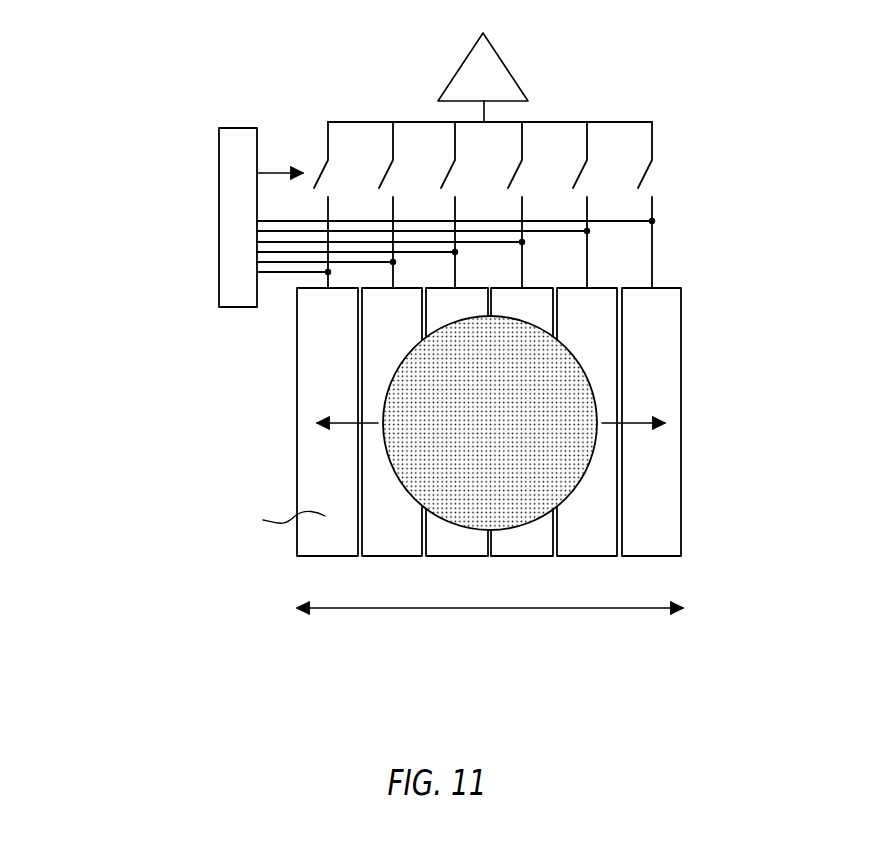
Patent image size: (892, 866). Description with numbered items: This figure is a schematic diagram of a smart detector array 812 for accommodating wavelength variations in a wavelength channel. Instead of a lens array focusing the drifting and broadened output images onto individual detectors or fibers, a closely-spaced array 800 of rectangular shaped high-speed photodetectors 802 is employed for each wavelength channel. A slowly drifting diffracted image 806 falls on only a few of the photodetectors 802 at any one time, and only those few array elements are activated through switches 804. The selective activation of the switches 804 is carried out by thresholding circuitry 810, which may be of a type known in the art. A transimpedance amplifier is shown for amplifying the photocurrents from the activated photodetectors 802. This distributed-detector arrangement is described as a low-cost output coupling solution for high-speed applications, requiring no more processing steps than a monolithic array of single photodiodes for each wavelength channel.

The readout system 812 is at (212, 43).
The switches 804 is at (590, 170).
The thresholding circuitry 810 is at (233, 251).
The closely-spaced array 800 is at (478, 459).
The photodetectors 802 is at (377, 325).
The diffracted image 806 is at (467, 460).